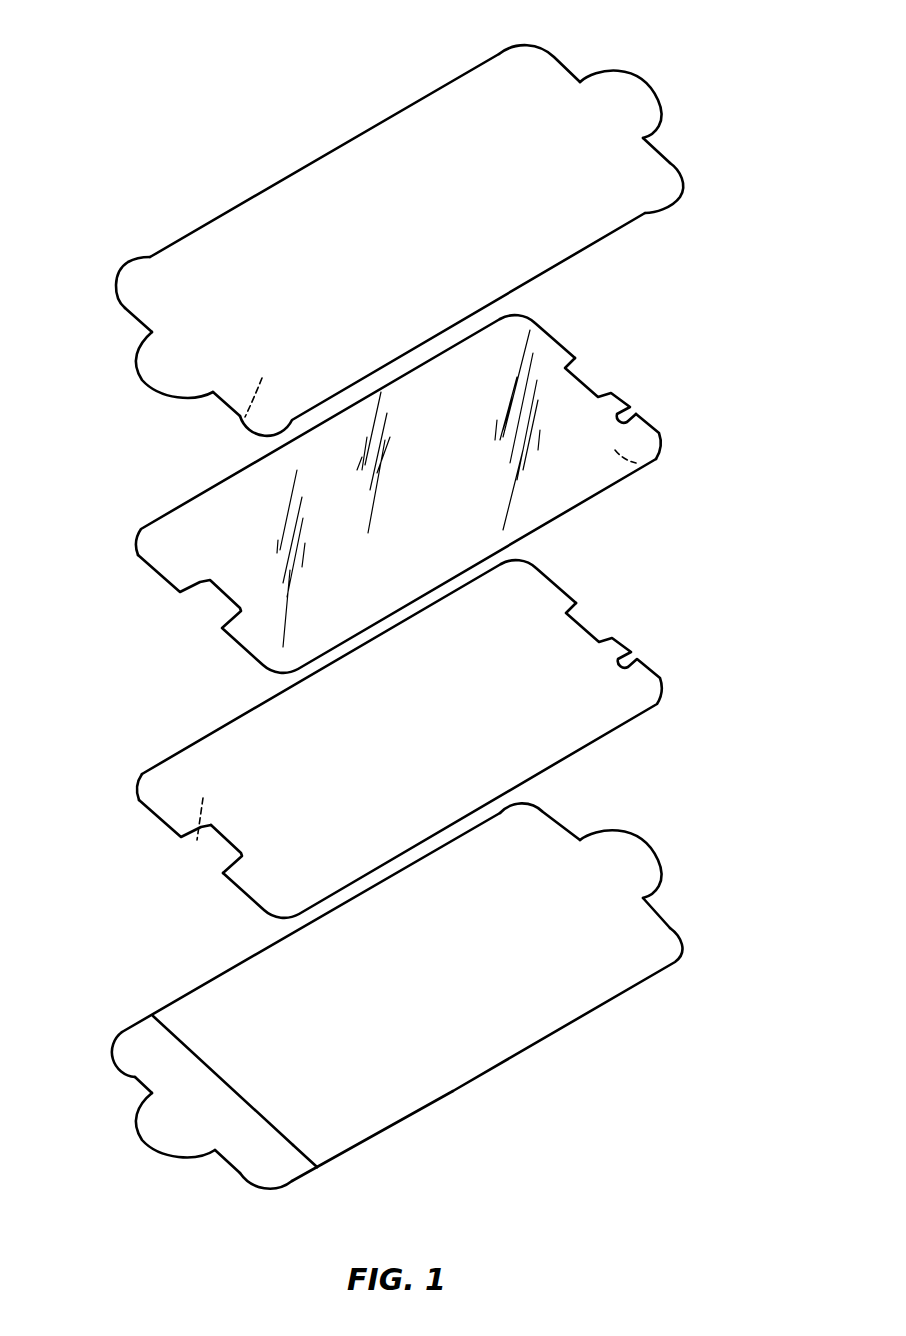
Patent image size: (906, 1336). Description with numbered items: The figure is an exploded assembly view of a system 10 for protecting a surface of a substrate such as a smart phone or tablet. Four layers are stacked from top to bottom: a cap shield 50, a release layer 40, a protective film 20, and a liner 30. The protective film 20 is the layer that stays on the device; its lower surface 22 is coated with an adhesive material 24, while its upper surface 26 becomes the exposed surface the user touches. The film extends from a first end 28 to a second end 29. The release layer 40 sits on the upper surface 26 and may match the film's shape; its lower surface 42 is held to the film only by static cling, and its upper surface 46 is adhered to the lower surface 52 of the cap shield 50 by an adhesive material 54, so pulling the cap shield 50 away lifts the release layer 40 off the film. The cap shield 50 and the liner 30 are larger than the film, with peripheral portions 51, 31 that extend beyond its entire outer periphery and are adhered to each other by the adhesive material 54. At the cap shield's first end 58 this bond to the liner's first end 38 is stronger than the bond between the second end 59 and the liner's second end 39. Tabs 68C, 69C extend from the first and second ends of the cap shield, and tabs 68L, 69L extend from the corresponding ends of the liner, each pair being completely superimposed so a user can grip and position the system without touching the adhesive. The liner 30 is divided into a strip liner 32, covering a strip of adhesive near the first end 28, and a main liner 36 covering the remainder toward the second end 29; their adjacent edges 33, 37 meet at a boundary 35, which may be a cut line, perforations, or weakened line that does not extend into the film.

The system 10 is at (153, 100).
The cap shield 50 is at (690, 70).
The second end of the cap shield 59 is at (543, 67).
The tab 69C is at (630, 90).
The peripheral portion of the cap shield 51 is at (636, 212).
The first end of the cap shield 58 is at (233, 386).
The tab 68C is at (157, 370).
The lower surface of the cap shield 52 is at (202, 427).
The adhesive material 54 is at (243, 405).
The release layer 40 is at (640, 360).
The upper surface of the release layer 46 is at (513, 347).
The lower surface of the release layer 42 is at (646, 460).
The protective film 20 is at (640, 612).
The second end of the protective film 29 is at (536, 590).
The upper surface of the protective film 26 is at (263, 747).
The first end of the protective film 28 is at (153, 790).
The lower surface of the protective film 22 is at (157, 840).
The adhesive material 24 is at (200, 830).
The liner 30 is at (693, 830).
The second end of the liner 39 is at (541, 826).
The tab 69L is at (655, 862).
The peripheral portion of the liner 31 is at (238, 990).
The main liner 36 is at (380, 1107).
The edge of the main liner 37 is at (310, 1166).
The boundary 35 is at (287, 1140).
The edge of the strip liner 33 is at (172, 1029).
The strip liner 32 is at (243, 1147).
The tab 68L is at (158, 1137).
The first end of the liner 38 is at (140, 1050).